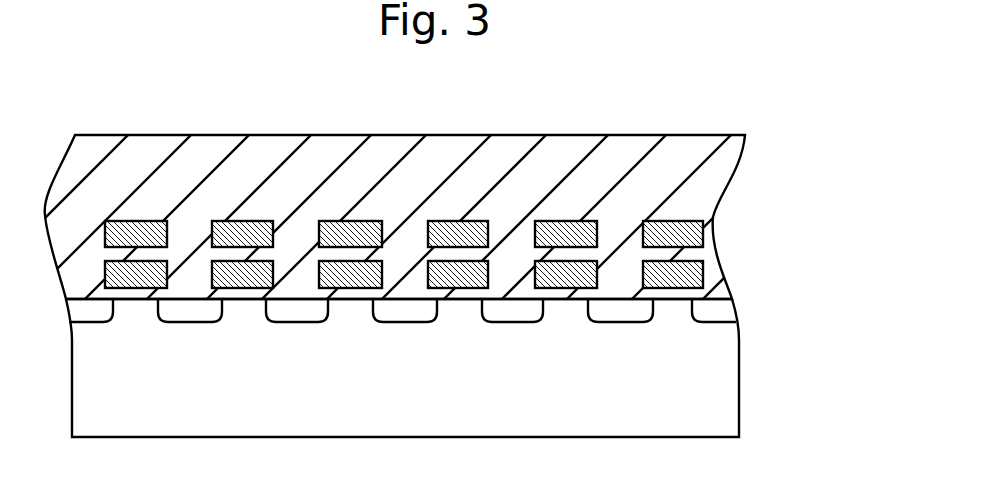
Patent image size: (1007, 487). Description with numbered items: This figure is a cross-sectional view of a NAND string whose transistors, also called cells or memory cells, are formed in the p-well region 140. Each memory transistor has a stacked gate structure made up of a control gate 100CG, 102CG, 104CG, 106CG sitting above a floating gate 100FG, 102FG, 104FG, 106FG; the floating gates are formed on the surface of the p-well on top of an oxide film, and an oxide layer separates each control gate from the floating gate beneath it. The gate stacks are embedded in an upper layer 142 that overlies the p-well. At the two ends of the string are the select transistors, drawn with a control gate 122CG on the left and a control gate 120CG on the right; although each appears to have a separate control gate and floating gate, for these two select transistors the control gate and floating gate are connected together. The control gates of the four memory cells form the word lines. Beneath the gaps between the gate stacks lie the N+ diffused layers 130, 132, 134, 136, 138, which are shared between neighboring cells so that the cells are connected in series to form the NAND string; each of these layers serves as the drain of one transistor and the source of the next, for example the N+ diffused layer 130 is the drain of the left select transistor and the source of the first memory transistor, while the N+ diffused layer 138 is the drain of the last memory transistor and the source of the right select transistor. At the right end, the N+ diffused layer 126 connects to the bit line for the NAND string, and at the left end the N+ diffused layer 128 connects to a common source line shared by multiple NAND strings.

The insulating layer 142 is at (710, 191).
The p-well region 140 is at (728, 423).
The N+ diffused layer 126 is at (725, 313).
The N+ diffused layer 128 is at (90, 310).
The N+ diffused layer 130 is at (193, 310).
The N+ diffused layer 132 is at (298, 310).
The N+ diffused region 134 is at (408, 310).
The N+ diffused region 136 is at (517, 310).
The N+ diffused layer 138 is at (622, 310).
The floating gate 106FG is at (243, 280).
The floating gate 104FG is at (355, 280).
The floating gate 102FG is at (462, 280).
The floating gate 100FG is at (568, 280).
The control gate 122CG is at (137, 221).
The control gate 106CG is at (249, 221).
The control gate 104CG is at (355, 221).
The control gate 102CG is at (462, 221).
The control gate 100CG is at (568, 221).
The control gate 120CG is at (676, 221).